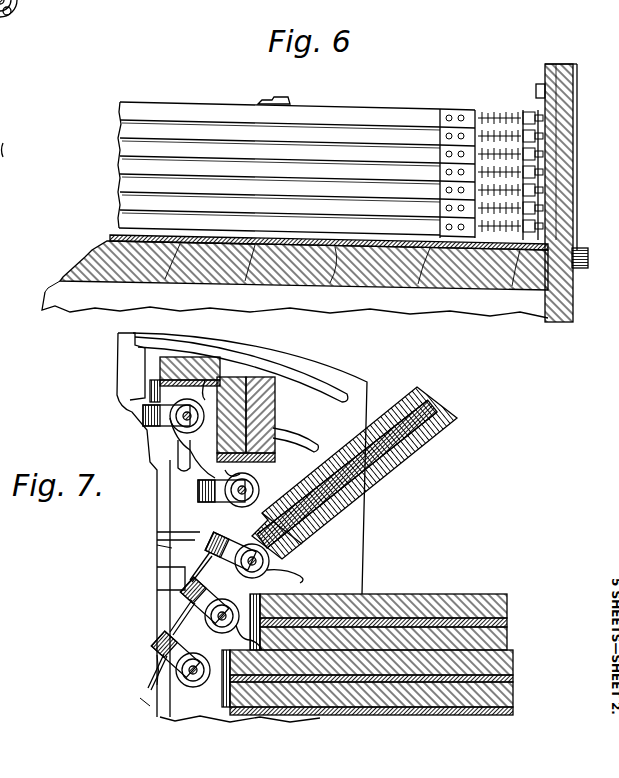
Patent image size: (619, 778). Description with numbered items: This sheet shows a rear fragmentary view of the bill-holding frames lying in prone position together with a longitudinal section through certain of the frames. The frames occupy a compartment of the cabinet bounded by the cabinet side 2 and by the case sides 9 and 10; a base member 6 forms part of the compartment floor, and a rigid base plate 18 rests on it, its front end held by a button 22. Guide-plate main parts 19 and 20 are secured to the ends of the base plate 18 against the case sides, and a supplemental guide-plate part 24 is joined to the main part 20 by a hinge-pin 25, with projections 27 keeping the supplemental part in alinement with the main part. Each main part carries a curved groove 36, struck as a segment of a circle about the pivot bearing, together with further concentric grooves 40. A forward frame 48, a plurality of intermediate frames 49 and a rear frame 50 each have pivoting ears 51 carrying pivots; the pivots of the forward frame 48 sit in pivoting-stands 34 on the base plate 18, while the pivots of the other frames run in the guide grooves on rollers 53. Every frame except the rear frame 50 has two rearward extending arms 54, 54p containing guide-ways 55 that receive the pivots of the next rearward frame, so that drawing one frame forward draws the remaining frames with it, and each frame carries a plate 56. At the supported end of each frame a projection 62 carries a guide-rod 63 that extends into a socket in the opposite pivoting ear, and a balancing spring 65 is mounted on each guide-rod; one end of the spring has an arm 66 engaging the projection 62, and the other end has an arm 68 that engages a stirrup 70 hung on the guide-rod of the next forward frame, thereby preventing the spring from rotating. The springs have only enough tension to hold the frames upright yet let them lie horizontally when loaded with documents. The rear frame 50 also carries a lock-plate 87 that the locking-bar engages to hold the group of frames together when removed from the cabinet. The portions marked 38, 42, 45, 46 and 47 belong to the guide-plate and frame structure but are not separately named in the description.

In FIG. 6, the cabinet side 2 is at (575, 316).
In FIG. 6, the base member 6 is at (218, 282).
In FIG. 6, the case side 9 is at (577, 77).
In FIG. 7, the case side 10 is at (362, 574).
In FIG. 6, the base plate 18 is at (146, 282).
In FIG. 6, the guide plate main part 19 is at (540, 190).
In FIG. 7, the guide plate main part 20 is at (168, 522).
In FIG. 6, the button 22 is at (250, 282).
In FIG. 7, the supplemental guide plate part 24 is at (350, 392).
In FIG. 6, the hinge-pin 25 is at (540, 88).
In FIG. 7, the projection 27 is at (185, 570).
In FIG. 6, the pivoting-stand 34 is at (578, 275).
In FIG. 6, the curved groove 36 is at (545, 222).
In FIG. 6, the wall edge 38 is at (573, 114).
In FIG. 6, the groove 40 is at (540, 212).
In FIG. 7, the frame web 42 is at (158, 665).
In FIG. 7, the frame edge 45 is at (370, 384).
In FIG. 7, the frame ledge 46 is at (172, 548).
In FIG. 7, the hatched block 47 is at (205, 545).
In FIG. 6, the forward frame 48 is at (325, 283).
In FIG. 7, the forward frame 48 is at (462, 714).
In FIG. 6, the intermediate frame 49 is at (344, 170).
In FIG. 7, the intermediate frame 49 is at (455, 416).
In FIG. 6, the rear frame 50 is at (188, 108).
In FIG. 6, the pivoting ear 51 is at (533, 114).
In FIG. 6, the roller 53 is at (545, 125).
In FIG. 6, the rearward extending arm 54 is at (550, 172).
In FIG. 7, the rearward extending arm 54 is at (180, 487).
In FIG. 7, the roller ledge 54' 54p is at (300, 570).
In FIG. 7, the guide-way 55 is at (178, 462).
In FIG. 7, the plate 56 is at (415, 430).
In FIG. 6, the projection 62 is at (472, 240).
In FIG. 7, the projection 62 is at (150, 438).
In FIG. 6, the member 63 is at (468, 246).
In FIG. 7, the member 63 is at (212, 698).
In FIG. 6, the balancing spring 65 is at (495, 115).
In FIG. 7, the balancing spring 65 is at (156, 705).
In FIG. 7, the spring arm 66 is at (340, 540).
In FIG. 7, the spring arm 68 is at (198, 603).
In FIG. 6, the stirrup 70 is at (515, 108).
In FIG. 7, the stirrup 70 is at (222, 545).
In FIG. 6, the lock-plate 87 is at (283, 99).